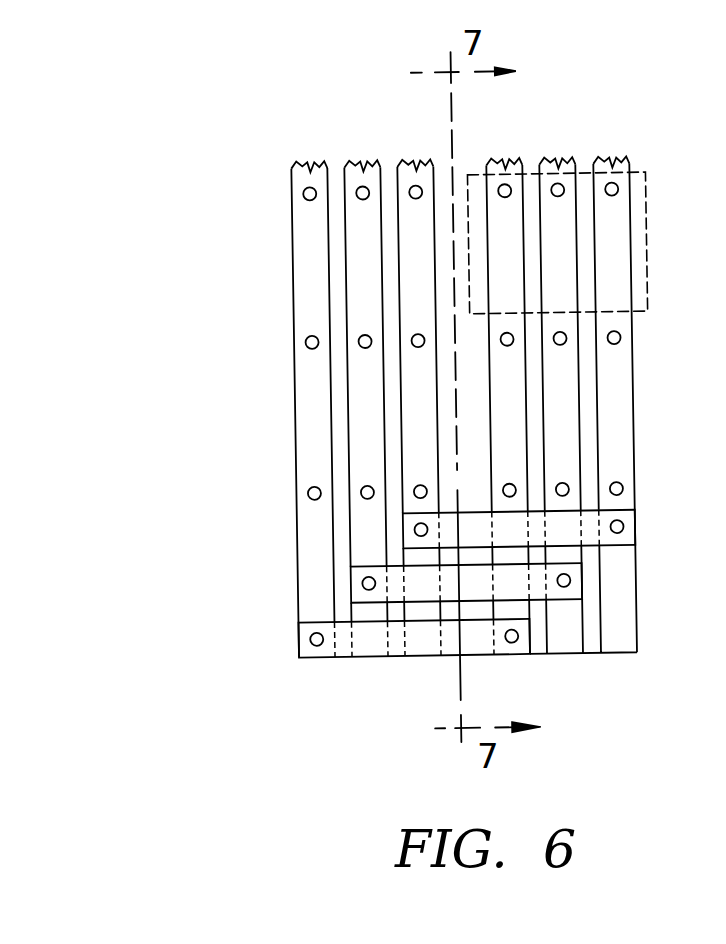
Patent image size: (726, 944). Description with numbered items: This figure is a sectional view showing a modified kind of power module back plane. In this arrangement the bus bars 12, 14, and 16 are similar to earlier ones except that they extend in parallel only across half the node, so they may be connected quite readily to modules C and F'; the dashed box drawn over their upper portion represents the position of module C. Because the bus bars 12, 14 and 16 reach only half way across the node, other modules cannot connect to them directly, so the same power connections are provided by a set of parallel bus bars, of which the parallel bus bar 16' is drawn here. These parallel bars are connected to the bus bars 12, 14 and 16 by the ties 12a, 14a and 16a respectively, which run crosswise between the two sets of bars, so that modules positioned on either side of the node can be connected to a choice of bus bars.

The bus bar 12 is at (420, 160).
The bus bar 14 is at (356, 163).
The bus bar 16 is at (533, 368).
The parallel bus bar 16' is at (268, 409).
The tie 12a is at (588, 528).
The tie 14a is at (508, 582).
The tie 16a is at (367, 643).